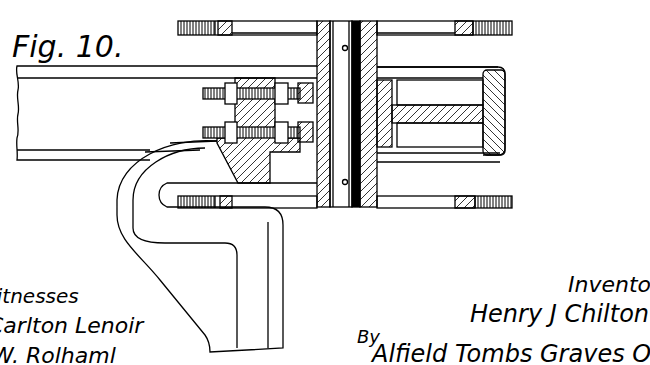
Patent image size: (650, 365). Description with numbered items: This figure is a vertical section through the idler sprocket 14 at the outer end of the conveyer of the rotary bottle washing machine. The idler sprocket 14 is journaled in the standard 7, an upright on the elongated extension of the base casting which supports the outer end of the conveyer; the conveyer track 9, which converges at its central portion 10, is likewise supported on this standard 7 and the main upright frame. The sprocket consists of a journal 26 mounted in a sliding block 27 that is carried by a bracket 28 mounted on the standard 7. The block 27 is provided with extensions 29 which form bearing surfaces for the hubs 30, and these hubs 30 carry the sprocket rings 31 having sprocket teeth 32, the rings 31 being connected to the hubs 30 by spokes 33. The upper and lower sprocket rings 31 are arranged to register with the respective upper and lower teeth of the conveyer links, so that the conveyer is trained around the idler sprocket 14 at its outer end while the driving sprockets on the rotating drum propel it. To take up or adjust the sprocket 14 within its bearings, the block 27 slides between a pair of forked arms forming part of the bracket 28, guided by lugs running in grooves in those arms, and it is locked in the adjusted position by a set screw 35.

The standard 7 is at (265, 297).
The conveyer track 9 is at (505, 125).
The central converging portion of conveyer track 10 is at (341, 103).
The idler sprocket 14 is at (495, 22).
The journal 26 is at (342, 207).
The sliding block 27 is at (317, 152).
The bracket 28 is at (227, 163).
The extensions 29 is at (373, 165).
The hubs 30 is at (378, 52).
The sprocket rings 31 is at (222, 35).
The sprocket teeth 32 is at (178, 30).
The spokes 33 is at (167, 99).
The set screw 35 is at (227, 100).